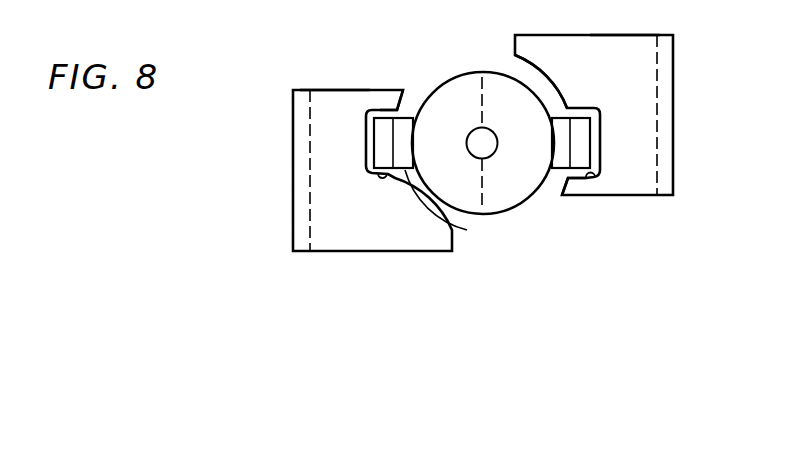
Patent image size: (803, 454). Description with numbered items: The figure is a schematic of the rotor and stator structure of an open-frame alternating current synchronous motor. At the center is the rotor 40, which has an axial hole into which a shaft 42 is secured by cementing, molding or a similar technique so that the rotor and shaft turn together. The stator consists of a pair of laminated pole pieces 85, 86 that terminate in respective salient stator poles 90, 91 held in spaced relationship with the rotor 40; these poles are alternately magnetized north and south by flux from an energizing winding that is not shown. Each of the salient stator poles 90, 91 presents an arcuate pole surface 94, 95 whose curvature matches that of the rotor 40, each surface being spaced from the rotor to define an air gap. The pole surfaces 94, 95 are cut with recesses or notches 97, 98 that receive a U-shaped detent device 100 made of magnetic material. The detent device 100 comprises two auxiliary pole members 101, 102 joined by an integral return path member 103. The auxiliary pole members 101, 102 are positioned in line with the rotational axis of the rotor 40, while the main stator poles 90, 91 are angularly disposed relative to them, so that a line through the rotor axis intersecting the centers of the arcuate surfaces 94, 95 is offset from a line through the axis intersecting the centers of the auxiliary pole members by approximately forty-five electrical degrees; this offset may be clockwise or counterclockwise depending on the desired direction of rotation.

The rotor 40 is at (497, 71).
The shaft 42 is at (492, 154).
The laminated pole piece 85 is at (292, 192).
The laminated pole piece 86 is at (675, 113).
The salient stator pole 90 is at (335, 88).
The salient stator pole 91 is at (625, 35).
The arcuate pole surface 94 is at (403, 100).
The arcuate pole surface 95 is at (520, 62).
The notch 97 is at (383, 179).
The notch 98 is at (597, 181).
The U-shaped detent device 100 is at (600, 94).
The auxiliary pole member 101 is at (374, 140).
The auxiliary pole member 102 is at (601, 150).
The return path member 103 is at (457, 209).